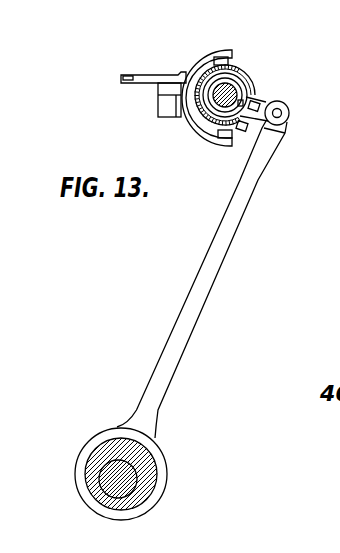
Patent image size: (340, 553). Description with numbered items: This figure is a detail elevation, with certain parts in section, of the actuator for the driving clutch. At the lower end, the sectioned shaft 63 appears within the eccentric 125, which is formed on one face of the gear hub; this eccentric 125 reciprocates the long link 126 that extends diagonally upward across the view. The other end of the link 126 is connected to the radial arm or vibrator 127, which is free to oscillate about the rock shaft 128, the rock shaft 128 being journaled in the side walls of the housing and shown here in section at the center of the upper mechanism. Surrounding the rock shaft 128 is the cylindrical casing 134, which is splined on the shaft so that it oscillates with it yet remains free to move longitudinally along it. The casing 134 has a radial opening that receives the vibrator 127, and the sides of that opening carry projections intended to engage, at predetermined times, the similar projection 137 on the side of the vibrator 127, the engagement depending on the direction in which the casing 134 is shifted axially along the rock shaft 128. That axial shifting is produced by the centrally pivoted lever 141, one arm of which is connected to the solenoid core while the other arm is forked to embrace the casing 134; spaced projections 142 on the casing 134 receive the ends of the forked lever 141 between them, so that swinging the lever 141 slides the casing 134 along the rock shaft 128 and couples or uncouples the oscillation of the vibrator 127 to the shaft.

The shaft 63 is at (130, 487).
The eccentric 125 is at (145, 462).
The link 126 is at (200, 280).
The vibrator 127 is at (265, 102).
The rock shaft 128 is at (236, 91).
The cylindrical casing 134 is at (235, 67).
The projection 137 is at (242, 128).
The lever 141 is at (172, 80).
The projections 142 is at (219, 57).